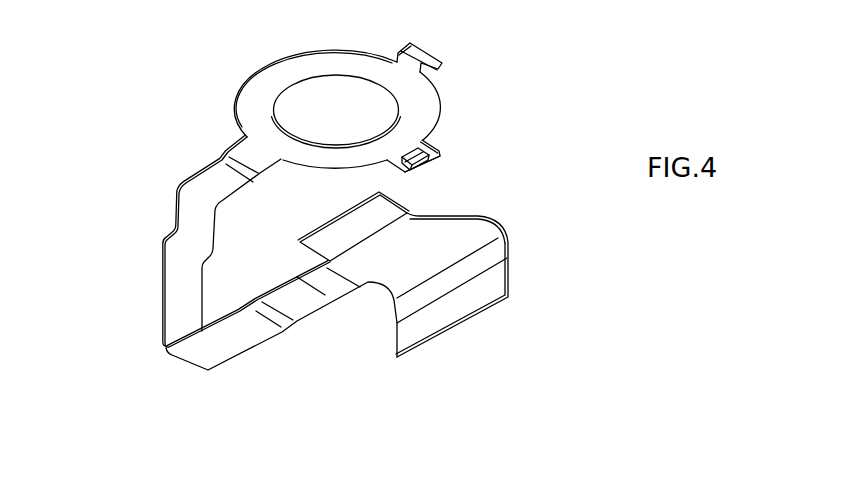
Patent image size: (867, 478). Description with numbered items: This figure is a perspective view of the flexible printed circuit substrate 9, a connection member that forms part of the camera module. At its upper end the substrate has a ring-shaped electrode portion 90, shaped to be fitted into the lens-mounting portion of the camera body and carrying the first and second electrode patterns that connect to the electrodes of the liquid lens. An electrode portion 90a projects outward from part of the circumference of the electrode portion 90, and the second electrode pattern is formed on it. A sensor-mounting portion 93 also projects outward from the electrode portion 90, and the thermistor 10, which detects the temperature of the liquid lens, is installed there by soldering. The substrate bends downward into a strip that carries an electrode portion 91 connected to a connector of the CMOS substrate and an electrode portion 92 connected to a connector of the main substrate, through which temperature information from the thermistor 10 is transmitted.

The flexible printed circuit substrate 9 is at (182, 176).
The ring-shaped electrode portion 90 is at (283, 77).
The electrode portion 90a is at (415, 58).
The electrode portion 91 is at (330, 217).
The electrode portion 92 is at (490, 287).
The sensor-mounting portion 93 is at (430, 143).
The thermistor 10 is at (428, 157).